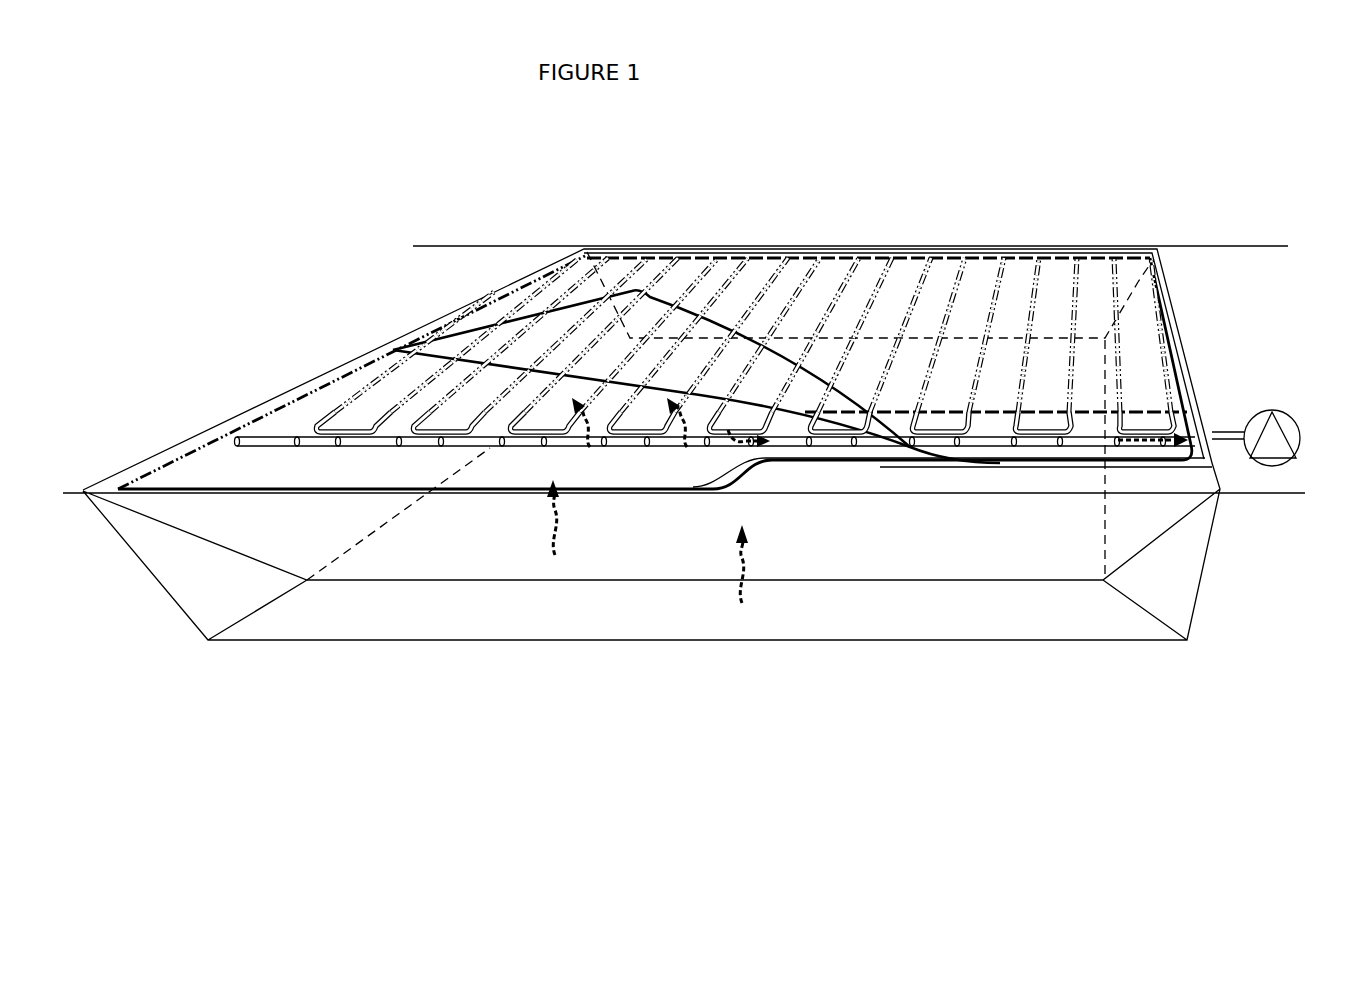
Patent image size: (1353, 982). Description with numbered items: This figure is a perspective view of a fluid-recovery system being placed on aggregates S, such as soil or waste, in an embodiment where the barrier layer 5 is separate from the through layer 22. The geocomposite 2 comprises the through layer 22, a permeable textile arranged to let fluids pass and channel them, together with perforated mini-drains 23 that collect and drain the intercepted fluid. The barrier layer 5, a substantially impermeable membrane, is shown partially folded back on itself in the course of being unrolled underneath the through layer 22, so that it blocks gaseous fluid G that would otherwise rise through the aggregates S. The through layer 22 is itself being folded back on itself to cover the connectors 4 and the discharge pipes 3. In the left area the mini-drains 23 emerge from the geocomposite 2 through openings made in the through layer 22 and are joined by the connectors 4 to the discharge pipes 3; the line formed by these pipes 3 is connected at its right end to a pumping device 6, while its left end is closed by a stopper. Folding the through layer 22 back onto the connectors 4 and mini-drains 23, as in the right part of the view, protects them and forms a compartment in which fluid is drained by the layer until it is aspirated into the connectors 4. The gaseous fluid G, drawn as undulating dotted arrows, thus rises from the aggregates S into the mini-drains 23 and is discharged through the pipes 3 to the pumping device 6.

The geocomposite 2 is at (375, 353).
The discharge pipes 3 is at (372, 440).
The connectors 4 is at (527, 437).
The barrier layer 5 is at (413, 336).
The pumping device 6 is at (1272, 467).
The through layer 22 is at (398, 356).
The perforated mini-drains 23 is at (443, 398).
The gaseous fluid G is at (1195, 437).
The aggregates S is at (1013, 528).